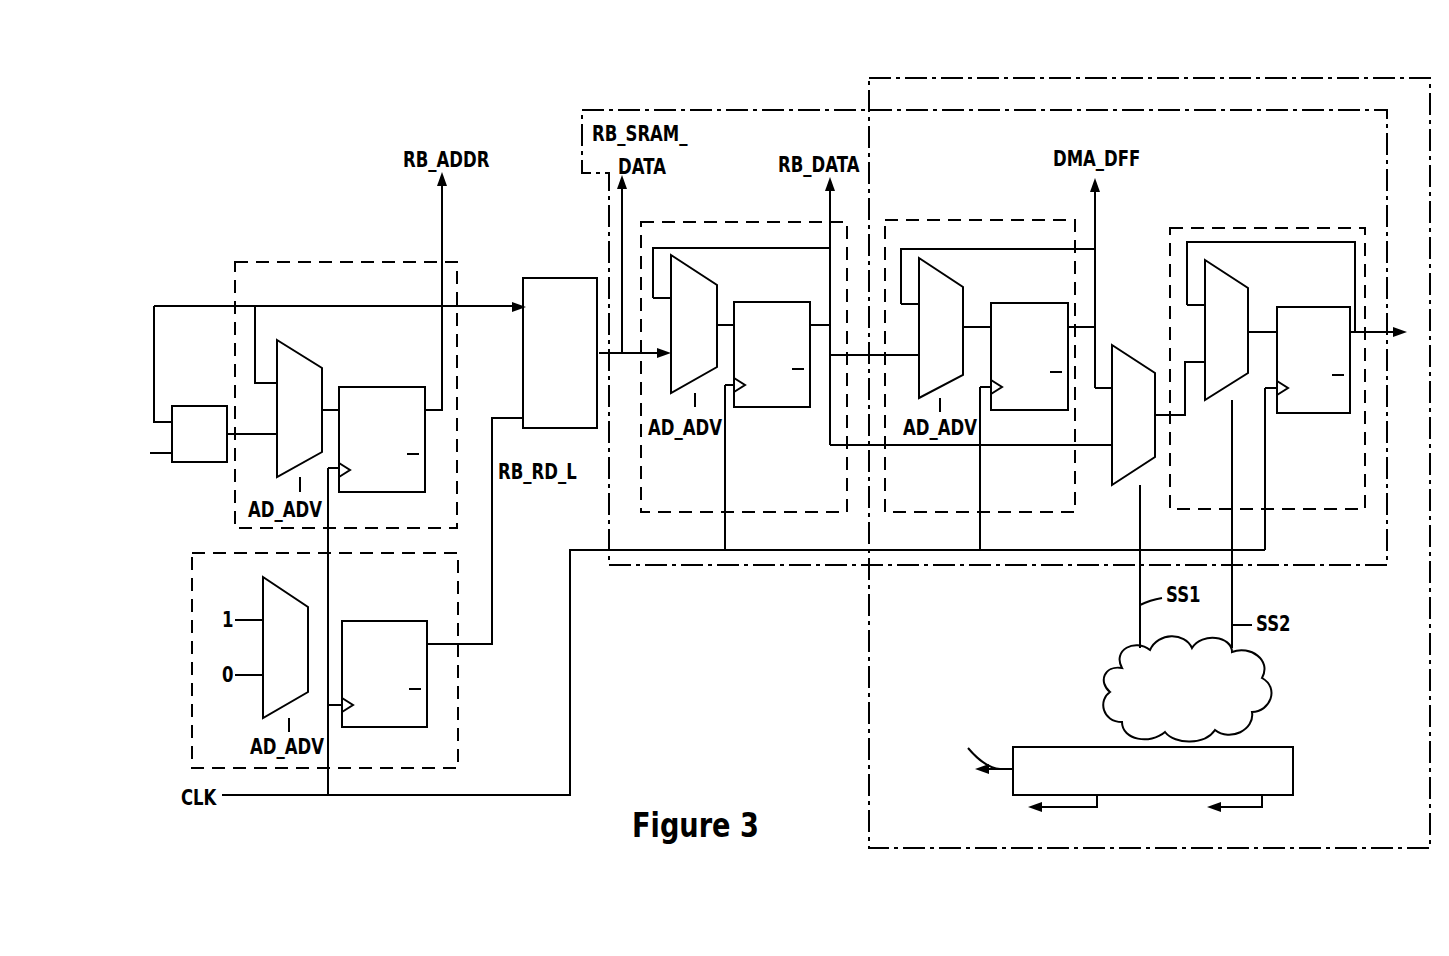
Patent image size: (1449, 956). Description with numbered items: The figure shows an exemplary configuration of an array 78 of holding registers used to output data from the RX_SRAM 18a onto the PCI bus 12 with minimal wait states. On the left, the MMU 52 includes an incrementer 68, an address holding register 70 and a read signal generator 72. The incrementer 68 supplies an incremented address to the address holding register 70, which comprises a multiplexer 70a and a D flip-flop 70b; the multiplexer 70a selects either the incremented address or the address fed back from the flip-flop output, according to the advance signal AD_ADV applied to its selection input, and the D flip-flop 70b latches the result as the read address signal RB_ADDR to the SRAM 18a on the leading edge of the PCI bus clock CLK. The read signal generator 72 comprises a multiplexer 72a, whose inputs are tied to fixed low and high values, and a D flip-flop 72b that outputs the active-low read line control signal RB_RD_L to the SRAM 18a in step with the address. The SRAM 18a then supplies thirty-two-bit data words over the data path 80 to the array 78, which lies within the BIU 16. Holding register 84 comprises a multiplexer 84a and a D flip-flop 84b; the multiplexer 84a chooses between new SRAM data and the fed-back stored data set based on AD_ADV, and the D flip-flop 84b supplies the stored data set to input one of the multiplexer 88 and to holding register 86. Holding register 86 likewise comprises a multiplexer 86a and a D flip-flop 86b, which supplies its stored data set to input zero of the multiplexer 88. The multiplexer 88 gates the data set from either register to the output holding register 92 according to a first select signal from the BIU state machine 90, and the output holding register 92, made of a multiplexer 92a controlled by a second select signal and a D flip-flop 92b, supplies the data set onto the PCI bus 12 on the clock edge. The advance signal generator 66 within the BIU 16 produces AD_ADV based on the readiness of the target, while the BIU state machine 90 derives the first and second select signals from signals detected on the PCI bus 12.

The BIU 16 is at (1133, 78).
The array of holding registers 78 is at (783, 110).
The address holding register 70 is at (266, 262).
The multiplexer 70a is at (298, 362).
The D flip-flop 70b is at (398, 388).
The incrementer 68 is at (205, 462).
The read signal generator 72 is at (458, 672).
The multiplexer 72a is at (268, 598).
The D flip-flop 72b is at (376, 622).
The RX_SRAM 18a is at (570, 400).
The data path 80 is at (628, 211).
The holding register 84 is at (707, 222).
The multiplexer 84a is at (707, 287).
The D flip-flop 84b is at (769, 302).
The holding register 86 is at (955, 220).
The multiplexer 86a is at (940, 285).
The D flip-flop 86b is at (1033, 303).
The multiplexer 88 is at (1130, 358).
The output holding register 92 is at (1232, 226).
The multiplexer 92a is at (1228, 284).
The D flip-flop 92b is at (1317, 307).
The PCI bus 12 is at (1395, 359).
The BIU state machine 90 is at (1268, 694).
The advance signal generator 66 is at (1040, 750).
The MMU 52 is at (328, 824).